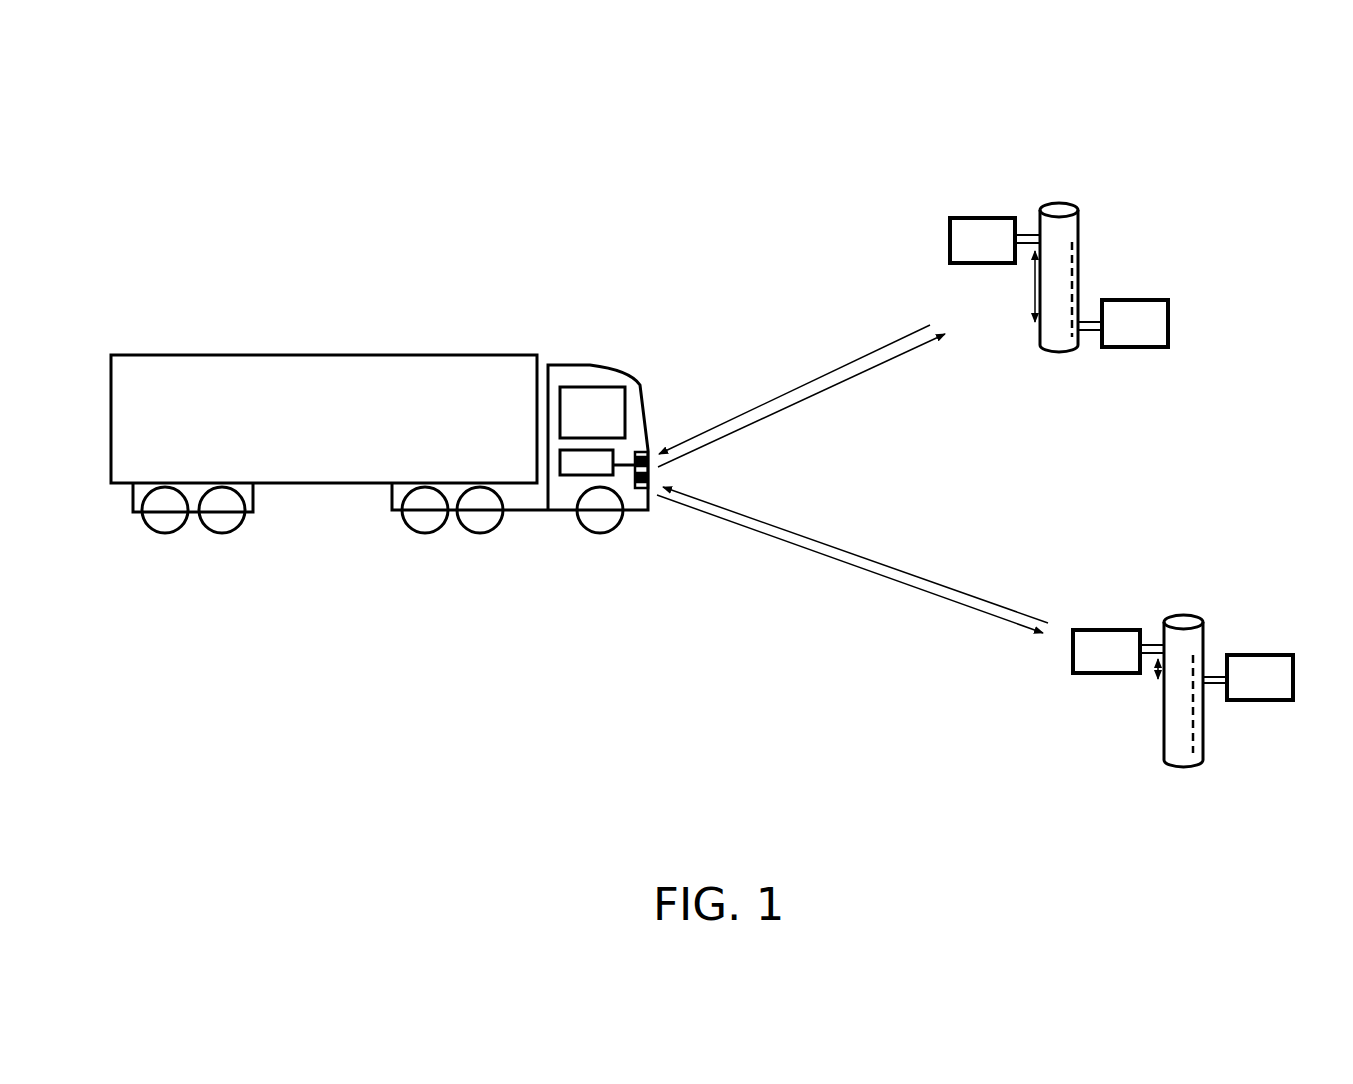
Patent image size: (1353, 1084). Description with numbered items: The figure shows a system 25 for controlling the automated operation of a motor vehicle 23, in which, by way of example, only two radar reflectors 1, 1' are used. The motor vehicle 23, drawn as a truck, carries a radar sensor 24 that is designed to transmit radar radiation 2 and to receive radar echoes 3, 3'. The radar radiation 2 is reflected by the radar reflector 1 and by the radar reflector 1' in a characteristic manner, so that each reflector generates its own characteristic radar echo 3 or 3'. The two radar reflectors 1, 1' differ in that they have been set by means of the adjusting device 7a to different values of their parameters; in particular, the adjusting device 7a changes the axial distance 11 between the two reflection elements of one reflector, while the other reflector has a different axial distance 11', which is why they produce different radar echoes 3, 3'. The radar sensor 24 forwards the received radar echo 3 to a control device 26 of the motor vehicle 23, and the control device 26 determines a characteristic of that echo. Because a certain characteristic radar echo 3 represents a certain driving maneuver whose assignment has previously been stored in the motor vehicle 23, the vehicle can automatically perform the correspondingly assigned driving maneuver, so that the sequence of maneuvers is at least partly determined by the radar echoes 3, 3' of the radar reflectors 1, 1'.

The radar reflector 1 is at (1045, 211).
The radar reflector 1' is at (1177, 635).
The radar radiation 2 is at (873, 367).
The radar echo 3 is at (794, 378).
The radar echo 3' is at (855, 555).
The adjusting device 7a is at (1078, 290).
The axial distance 11 is at (1000, 286).
The axial distance 11' is at (1119, 687).
The motor vehicle 23 is at (487, 300).
The radar sensor 24 is at (648, 510).
The system 25 is at (317, 132).
The control device 26 is at (588, 476).